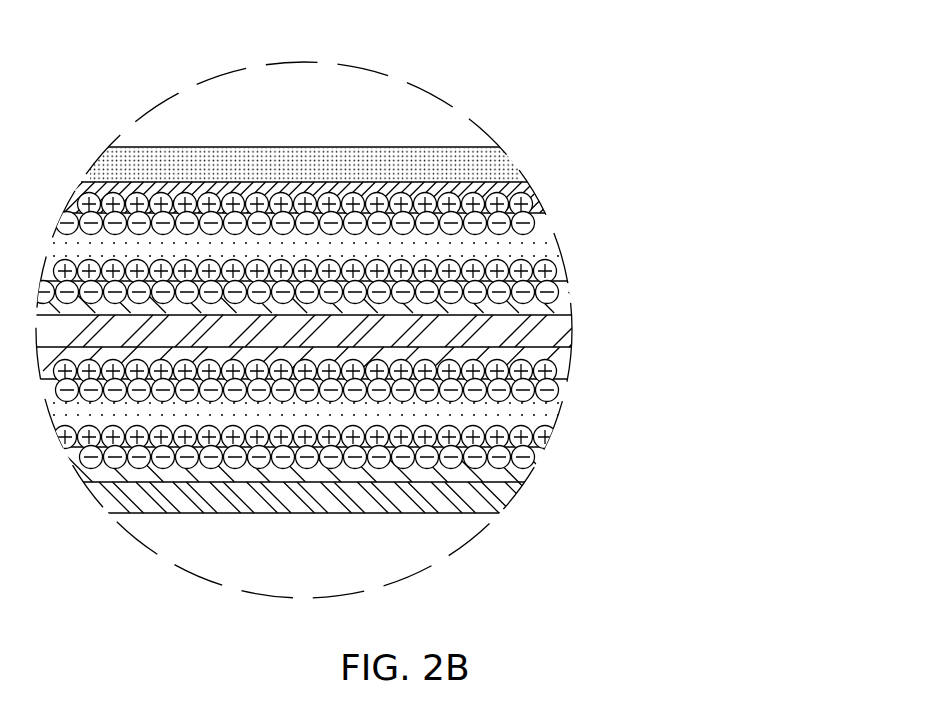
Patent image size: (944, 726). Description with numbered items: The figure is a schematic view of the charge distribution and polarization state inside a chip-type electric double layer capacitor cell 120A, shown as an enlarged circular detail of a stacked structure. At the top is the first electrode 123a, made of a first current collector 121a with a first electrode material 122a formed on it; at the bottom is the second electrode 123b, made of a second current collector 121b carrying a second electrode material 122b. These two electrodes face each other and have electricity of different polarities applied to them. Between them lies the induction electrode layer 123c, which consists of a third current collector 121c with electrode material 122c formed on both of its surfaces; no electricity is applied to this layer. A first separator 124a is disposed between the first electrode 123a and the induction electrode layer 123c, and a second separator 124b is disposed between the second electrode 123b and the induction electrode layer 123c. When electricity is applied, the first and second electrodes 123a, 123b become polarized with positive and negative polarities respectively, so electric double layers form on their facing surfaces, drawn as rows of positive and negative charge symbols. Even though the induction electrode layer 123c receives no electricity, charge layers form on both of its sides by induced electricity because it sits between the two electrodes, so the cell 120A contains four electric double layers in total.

The chip-type electric double layer capacitor cell 120A is at (745, 173).
The first current collector 121a is at (505, 153).
The second current collector 121b is at (505, 503).
The third current collector 121c is at (547, 333).
The first electrode material 122a is at (538, 200).
The second electrode material 122b is at (530, 476).
The electrode material 122c is at (565, 298).
The first electrode 123a is at (645, 143).
The second electrode 123b is at (645, 457).
The induction electrode layer 123c is at (667, 287).
The first separator 124a is at (548, 245).
The second separator 124b is at (548, 412).